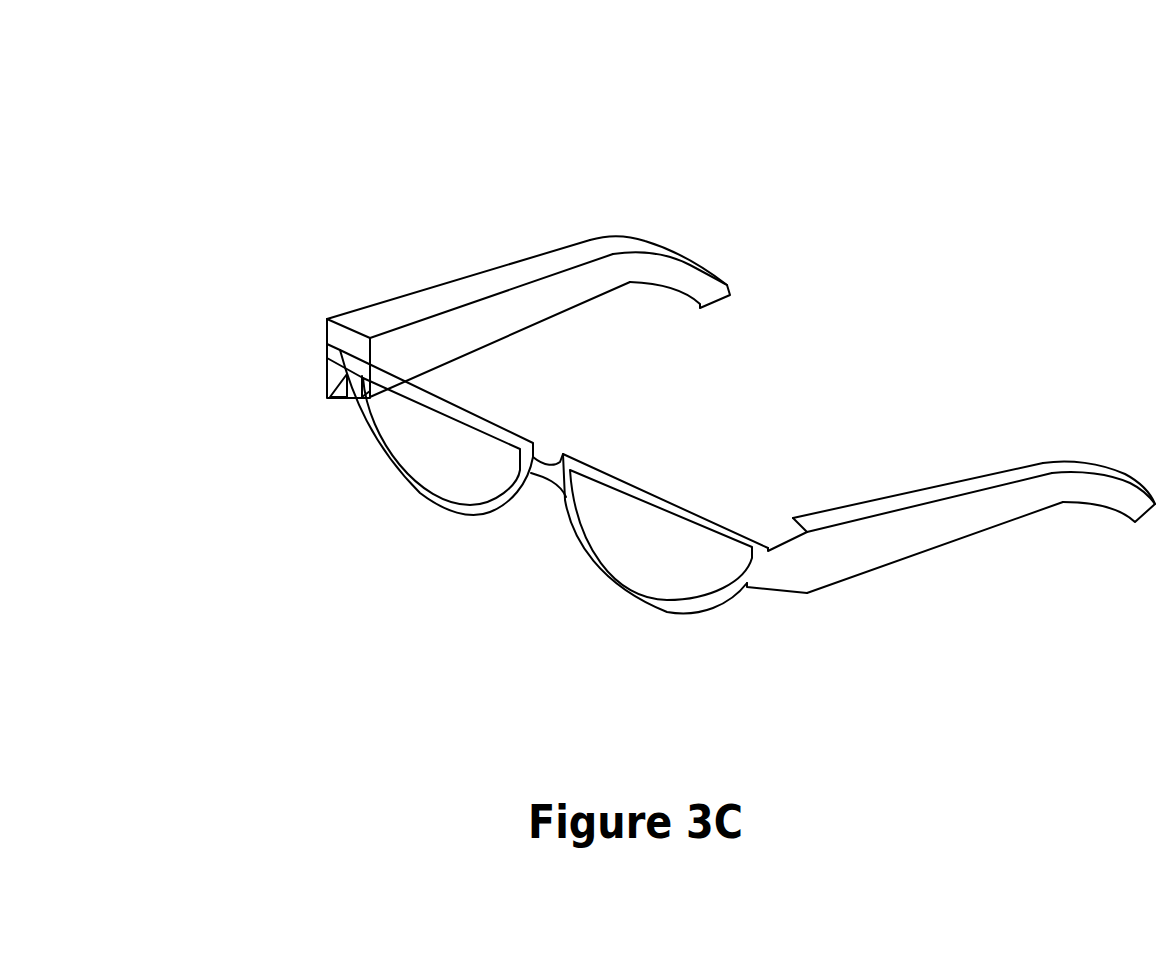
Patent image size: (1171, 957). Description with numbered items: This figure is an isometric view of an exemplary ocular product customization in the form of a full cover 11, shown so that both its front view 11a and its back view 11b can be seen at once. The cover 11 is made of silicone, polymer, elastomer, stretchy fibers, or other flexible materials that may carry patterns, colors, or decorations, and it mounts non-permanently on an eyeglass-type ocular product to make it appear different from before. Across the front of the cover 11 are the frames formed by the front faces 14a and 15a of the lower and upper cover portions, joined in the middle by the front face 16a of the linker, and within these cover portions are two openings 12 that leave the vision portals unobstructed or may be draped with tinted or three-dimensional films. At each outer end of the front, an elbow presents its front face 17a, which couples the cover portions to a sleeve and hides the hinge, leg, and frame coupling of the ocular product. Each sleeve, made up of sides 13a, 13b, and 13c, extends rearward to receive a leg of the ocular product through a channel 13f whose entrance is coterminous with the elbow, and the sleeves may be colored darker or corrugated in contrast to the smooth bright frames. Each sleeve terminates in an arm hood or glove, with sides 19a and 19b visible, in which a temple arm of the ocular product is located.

The cover 11 is at (248, 152).
The front view 11a is at (643, 678).
The back view 11b is at (1103, 450).
The openings 12 is at (508, 462).
The sleeve side 13a is at (928, 528).
The back face of sleeve 13b is at (478, 319).
The top surface of sleeve 13c is at (385, 314).
The channel 13f is at (342, 347).
The front face of lower cover portion 14a is at (412, 505).
The front face of upper cover portion 15a is at (475, 414).
The front face of linker 16a is at (538, 482).
The elbow front face 17a is at (326, 367).
The glove side 19a is at (1099, 491).
The glove side 19b is at (660, 272).